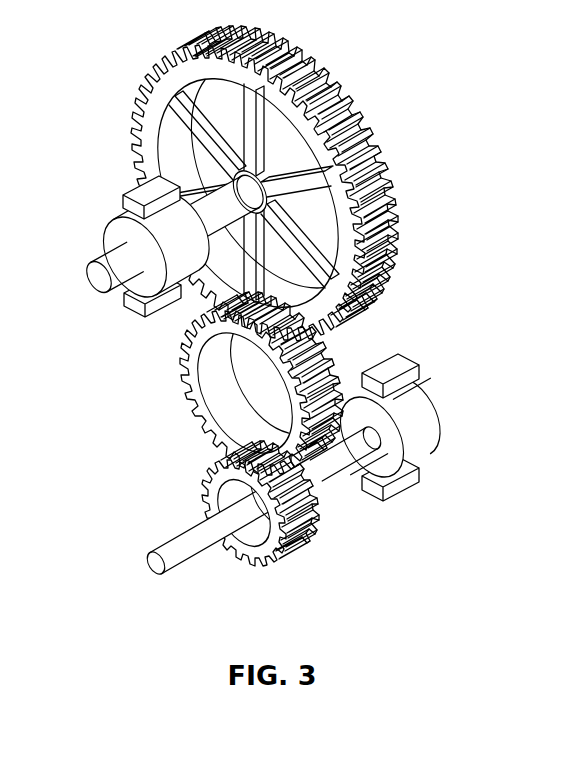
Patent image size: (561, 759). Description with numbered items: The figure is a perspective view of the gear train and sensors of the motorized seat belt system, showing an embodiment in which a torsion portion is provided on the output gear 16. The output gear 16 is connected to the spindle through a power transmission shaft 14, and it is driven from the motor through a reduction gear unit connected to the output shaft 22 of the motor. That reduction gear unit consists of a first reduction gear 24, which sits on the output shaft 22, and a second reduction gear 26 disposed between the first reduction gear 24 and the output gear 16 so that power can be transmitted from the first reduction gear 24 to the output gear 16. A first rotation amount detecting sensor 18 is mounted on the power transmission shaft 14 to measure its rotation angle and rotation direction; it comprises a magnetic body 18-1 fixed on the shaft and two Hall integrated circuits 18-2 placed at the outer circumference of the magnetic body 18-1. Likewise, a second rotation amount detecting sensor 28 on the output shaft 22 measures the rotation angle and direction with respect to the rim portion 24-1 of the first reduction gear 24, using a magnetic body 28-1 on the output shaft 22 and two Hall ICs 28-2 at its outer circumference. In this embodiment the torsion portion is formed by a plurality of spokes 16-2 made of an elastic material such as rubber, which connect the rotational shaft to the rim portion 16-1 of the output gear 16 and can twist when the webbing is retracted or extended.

The power transmission shaft 14 is at (210, 150).
The output gear 16 is at (277, 184).
The rim portion 16-1 is at (283, 108).
The spokes 16-2 is at (310, 155).
The first rotation amount detecting sensor 18 is at (111, 278).
The magnetic body 18-1 is at (115, 234).
The Hall integrated circuits 18-2 is at (137, 193).
The output shaft 22 is at (180, 542).
The first reduction gear 24 is at (282, 531).
The rim portion 24-1 is at (251, 558).
The second reduction gear 26 is at (193, 406).
The second rotation amount detecting sensor 28 is at (432, 417).
The magnetic body 28-1 is at (432, 422).
The Hall ICs 28-2 is at (398, 360).